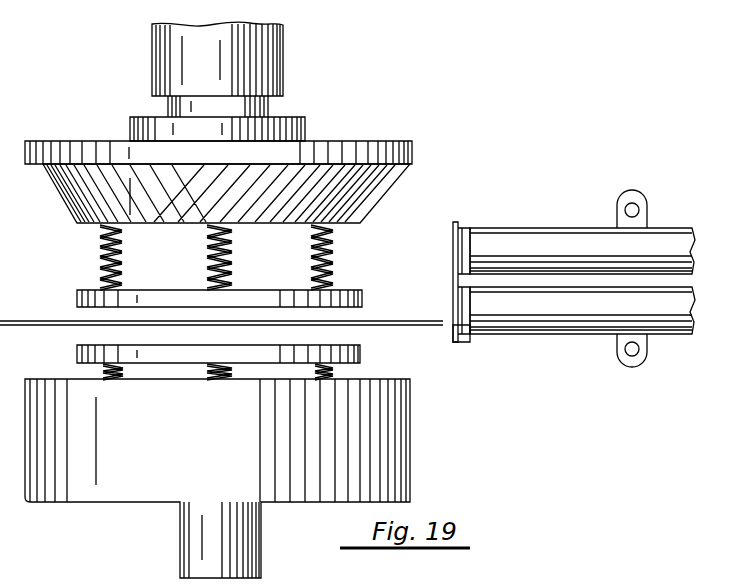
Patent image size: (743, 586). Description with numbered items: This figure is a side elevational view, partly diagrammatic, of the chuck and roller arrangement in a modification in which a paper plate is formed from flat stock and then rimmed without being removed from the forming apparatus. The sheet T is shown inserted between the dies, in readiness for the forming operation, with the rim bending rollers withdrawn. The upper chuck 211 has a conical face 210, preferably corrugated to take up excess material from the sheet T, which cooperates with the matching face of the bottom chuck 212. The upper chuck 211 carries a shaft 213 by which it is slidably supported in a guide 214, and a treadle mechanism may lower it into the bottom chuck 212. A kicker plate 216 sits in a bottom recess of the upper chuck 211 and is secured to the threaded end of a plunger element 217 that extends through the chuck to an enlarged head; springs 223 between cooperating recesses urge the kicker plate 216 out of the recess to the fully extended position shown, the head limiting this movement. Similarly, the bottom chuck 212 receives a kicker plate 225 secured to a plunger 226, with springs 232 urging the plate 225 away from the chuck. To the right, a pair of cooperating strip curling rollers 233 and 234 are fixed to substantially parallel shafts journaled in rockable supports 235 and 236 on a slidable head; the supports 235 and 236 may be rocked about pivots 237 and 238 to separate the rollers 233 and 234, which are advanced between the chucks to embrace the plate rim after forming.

The conical face 210 is at (378, 192).
The upper chuck 211 is at (365, 141).
The bottom chuck 212 is at (410, 428).
The shaft 213 is at (270, 103).
The guide 214 is at (283, 45).
The kicker plate 216 is at (357, 290).
The plunger element 217 is at (232, 262).
The springs 223 is at (333, 240).
The kicker plate 225 is at (362, 350).
The plunger 226 is at (207, 380).
The springs 232 is at (335, 375).
The strip curling roller 233 is at (456, 222).
The strip curling roller 234 is at (456, 345).
The rockable support 235 is at (543, 230).
The rockable support 236 is at (538, 337).
The pivot 237 is at (638, 203).
The pivot 238 is at (632, 360).
The sheet T is at (377, 320).